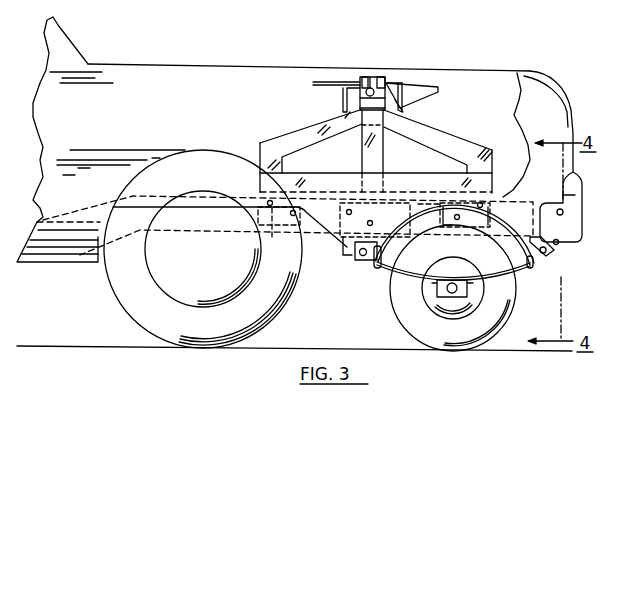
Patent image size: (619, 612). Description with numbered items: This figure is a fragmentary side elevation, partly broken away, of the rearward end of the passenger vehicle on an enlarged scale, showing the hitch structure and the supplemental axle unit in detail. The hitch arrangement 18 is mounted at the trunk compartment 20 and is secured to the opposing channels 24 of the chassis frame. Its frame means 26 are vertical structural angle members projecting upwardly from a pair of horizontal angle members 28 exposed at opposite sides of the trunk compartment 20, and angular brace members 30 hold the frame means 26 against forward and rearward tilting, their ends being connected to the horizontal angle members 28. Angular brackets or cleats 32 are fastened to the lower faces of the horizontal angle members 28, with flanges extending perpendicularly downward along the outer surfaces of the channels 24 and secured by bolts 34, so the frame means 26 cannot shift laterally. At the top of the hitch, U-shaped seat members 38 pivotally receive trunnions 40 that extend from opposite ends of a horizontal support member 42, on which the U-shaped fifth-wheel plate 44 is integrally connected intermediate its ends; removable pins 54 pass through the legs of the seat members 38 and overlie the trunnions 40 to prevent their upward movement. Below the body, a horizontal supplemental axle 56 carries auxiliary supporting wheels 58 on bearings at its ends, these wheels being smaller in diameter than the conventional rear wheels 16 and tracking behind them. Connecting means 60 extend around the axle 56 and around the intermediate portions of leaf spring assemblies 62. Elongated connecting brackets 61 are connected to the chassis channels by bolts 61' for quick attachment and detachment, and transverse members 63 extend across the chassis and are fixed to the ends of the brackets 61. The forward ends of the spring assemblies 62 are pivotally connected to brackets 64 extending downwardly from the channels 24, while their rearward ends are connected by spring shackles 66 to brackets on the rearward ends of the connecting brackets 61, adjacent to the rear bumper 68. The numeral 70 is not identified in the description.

The conventional rear wheels 16 is at (125, 305).
The hitch arrangement 18 is at (276, 126).
The trunk compartment 20 is at (173, 82).
The opposing channels 24 is at (313, 227).
The frame means 26 is at (430, 128).
The horizontal angle members 28 is at (327, 180).
The angular brace members 30 is at (330, 121).
The angular brackets or cleats 32 is at (263, 205).
The bolts 34 is at (276, 230).
The U-shaped seat members 38 is at (383, 78).
The trunnions 40 is at (372, 77).
The horizontal support member 42 is at (400, 110).
The U-shaped fifth-wheel plate 44 is at (328, 80).
The removable pins 54 is at (381, 166).
The supplemental axle 56 is at (441, 298).
The auxiliary supporting wheels 58 is at (506, 307).
The connecting means 60 is at (468, 290).
The connecting brackets 61 is at (587, 207).
The bolts 61' is at (375, 220).
The leaf spring assemblies 62 is at (393, 277).
The transverse members 63 is at (348, 246).
The brackets 64 is at (376, 258).
The spring shackles 66 is at (559, 242).
The rear bumper 68 is at (577, 193).
The support 70 is at (418, 212).